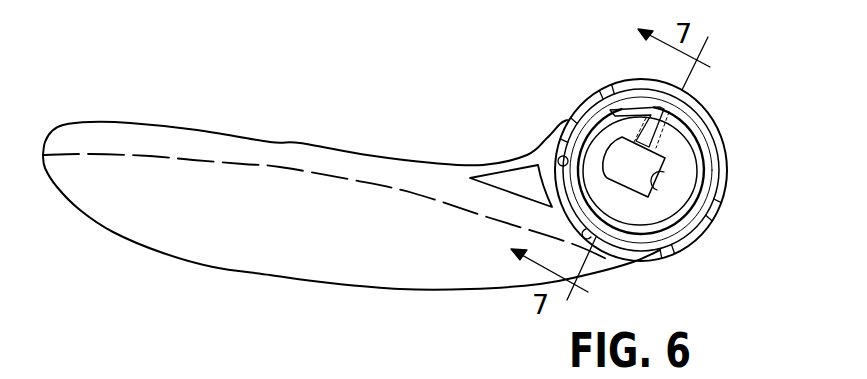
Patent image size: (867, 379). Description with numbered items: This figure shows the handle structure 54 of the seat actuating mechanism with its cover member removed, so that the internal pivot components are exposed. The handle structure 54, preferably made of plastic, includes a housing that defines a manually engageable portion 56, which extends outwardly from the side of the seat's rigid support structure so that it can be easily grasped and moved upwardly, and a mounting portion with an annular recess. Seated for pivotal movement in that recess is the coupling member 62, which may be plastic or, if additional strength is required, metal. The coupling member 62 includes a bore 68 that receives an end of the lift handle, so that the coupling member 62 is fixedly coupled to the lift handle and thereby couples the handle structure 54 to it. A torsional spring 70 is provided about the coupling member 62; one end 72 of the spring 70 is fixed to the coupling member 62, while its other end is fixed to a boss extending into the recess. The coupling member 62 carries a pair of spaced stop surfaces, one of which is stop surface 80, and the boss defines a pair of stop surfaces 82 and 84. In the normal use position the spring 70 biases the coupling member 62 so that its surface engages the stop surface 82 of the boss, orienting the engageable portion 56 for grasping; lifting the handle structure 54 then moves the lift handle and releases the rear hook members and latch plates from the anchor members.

The handle structure 54 is at (315, 146).
The manually engageable portion 56 is at (336, 237).
The coupling member 62 is at (681, 173).
The bore 68 is at (660, 183).
The torsional spring 70 is at (682, 128).
The one end of the spring 72 is at (637, 113).
The stop surface 80 is at (596, 236).
The stop surface 82 is at (578, 154).
The stop surface 84 is at (525, 197).